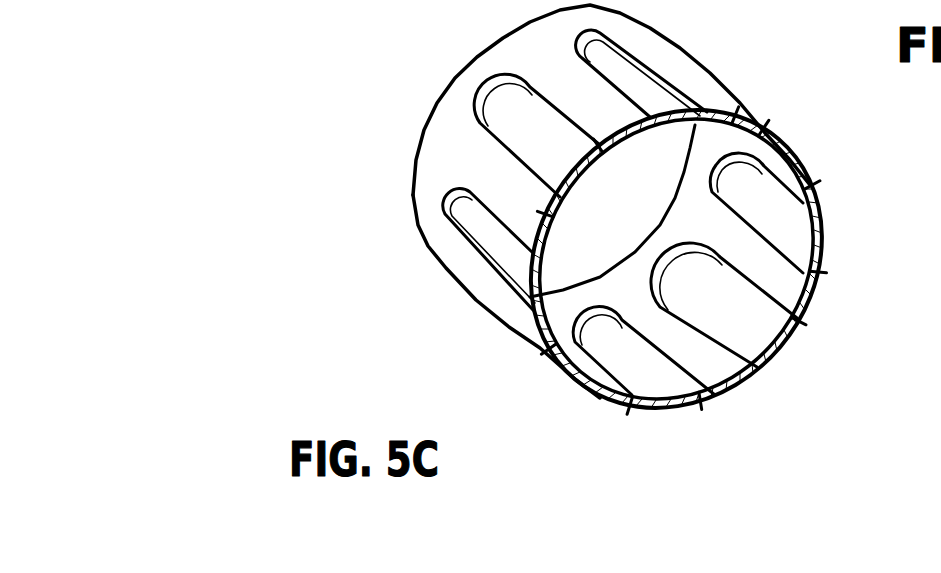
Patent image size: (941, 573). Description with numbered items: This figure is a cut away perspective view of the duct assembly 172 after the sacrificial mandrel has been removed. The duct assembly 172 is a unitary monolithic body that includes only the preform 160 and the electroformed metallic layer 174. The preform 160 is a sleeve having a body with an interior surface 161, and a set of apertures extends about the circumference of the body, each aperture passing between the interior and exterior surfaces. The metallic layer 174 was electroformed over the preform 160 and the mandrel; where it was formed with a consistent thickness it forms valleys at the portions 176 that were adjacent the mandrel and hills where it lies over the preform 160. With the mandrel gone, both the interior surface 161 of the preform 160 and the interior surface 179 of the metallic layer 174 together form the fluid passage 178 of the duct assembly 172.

The preform 160 is at (707, 356).
The interior surface 161 is at (777, 282).
The duct assembly 172 is at (606, 118).
The metallic layer 174 is at (765, 128).
The portions 176 is at (527, 133).
The fluid passage 178 is at (621, 192).
The interior surface of the metallic layer 179 is at (786, 219).